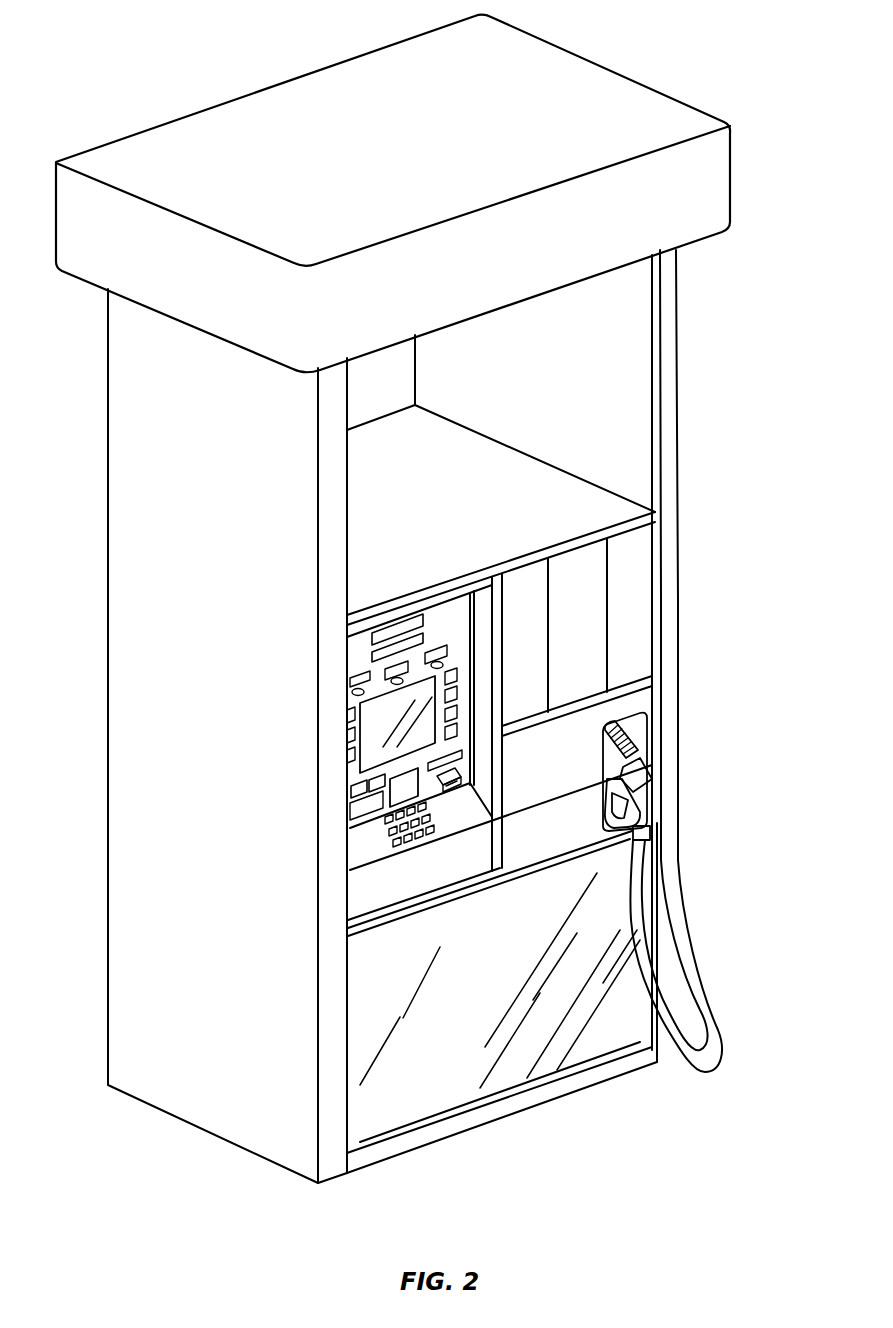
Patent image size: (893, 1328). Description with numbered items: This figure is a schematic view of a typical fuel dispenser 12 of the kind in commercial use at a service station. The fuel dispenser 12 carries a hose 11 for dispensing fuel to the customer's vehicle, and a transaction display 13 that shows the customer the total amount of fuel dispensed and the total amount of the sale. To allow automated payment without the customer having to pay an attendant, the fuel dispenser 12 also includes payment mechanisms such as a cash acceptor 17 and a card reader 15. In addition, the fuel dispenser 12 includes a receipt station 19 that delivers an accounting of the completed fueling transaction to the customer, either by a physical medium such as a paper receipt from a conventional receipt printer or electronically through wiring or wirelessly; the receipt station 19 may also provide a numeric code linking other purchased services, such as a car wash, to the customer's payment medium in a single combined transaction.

The hose 11 is at (633, 765).
The fuel dispenser 12 is at (115, 78).
The transaction display 13 is at (380, 630).
The card reader 15 is at (395, 781).
The cash acceptor 17 is at (358, 806).
The receipt station 19 is at (423, 750).